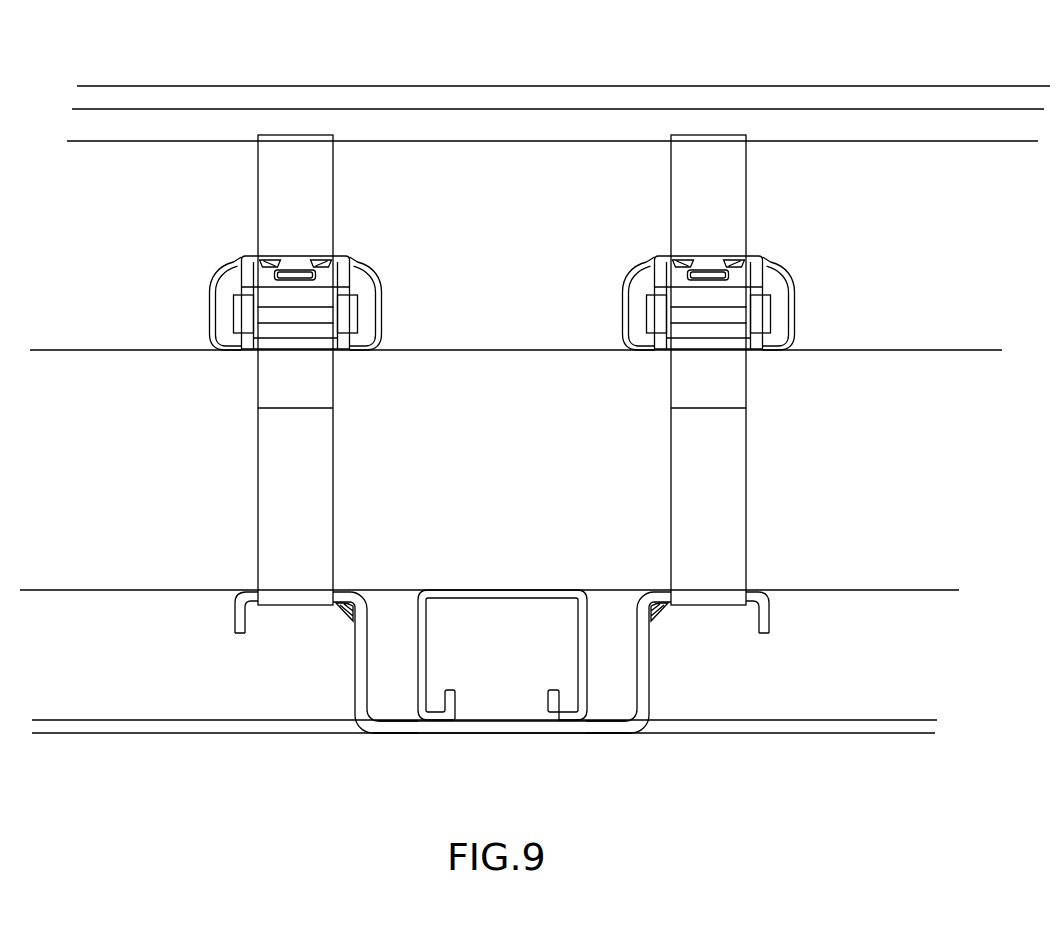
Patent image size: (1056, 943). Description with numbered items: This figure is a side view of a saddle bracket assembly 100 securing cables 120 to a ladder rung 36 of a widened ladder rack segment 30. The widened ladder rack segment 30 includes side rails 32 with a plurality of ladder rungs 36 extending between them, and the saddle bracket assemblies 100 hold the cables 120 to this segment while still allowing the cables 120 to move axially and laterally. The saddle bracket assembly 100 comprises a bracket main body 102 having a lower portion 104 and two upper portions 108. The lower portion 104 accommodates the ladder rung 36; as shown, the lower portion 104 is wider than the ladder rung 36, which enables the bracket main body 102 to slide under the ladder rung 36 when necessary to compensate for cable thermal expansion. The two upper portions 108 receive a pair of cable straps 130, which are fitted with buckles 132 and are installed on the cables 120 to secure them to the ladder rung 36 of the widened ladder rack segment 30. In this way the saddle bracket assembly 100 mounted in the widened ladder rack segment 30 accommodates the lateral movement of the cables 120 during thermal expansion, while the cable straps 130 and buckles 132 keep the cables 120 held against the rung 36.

The widened ladder rack segment 30 is at (850, 87).
The side rails 32 is at (815, 690).
The ladder rung 36 is at (588, 690).
The saddle bracket assembly 100 is at (553, 485).
The bracket main body 102 is at (567, 706).
The lower portion 104 is at (403, 725).
The upper portions 108 is at (770, 597).
The cables 120 is at (522, 240).
The cable straps 130 is at (702, 463).
The buckles 132 is at (783, 300).